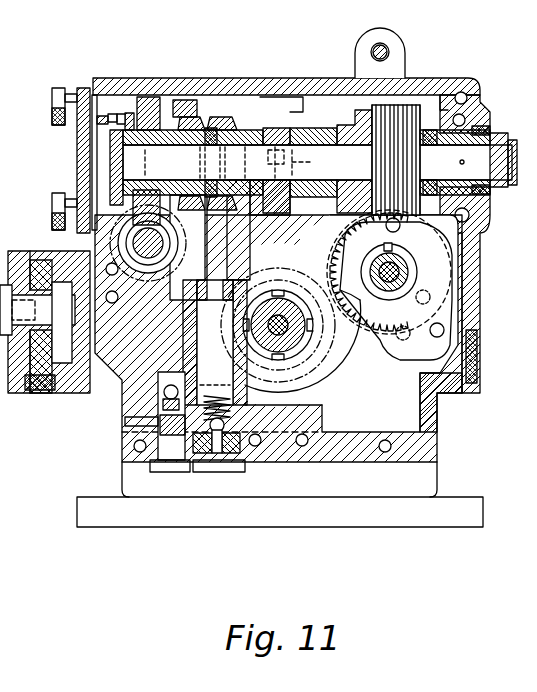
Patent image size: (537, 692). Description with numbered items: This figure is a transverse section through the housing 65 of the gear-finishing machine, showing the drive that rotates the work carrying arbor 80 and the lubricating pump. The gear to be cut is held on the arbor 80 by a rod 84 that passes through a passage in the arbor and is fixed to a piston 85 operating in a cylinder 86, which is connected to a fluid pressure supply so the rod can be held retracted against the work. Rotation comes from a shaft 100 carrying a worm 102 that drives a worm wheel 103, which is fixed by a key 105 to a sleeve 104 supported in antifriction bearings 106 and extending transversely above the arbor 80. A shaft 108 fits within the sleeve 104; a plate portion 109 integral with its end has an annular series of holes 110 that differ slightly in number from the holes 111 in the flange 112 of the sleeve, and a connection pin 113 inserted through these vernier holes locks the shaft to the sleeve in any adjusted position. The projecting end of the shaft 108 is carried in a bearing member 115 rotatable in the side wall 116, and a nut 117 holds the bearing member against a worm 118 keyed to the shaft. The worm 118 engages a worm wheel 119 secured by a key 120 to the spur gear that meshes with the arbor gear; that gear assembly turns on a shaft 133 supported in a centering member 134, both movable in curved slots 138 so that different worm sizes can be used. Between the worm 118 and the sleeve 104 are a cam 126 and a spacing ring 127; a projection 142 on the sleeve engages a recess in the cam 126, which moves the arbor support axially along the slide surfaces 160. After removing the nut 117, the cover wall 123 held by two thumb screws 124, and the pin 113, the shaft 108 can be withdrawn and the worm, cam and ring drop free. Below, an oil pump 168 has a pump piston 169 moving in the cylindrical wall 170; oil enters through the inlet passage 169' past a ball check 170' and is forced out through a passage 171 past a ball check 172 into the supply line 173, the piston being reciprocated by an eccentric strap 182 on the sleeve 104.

The housing 65 is at (247, 80).
The work carrying arbor 80 is at (295, 335).
The rod 84 is at (279, 316).
The piston 85 is at (72, 352).
The cylinder 86 is at (45, 395).
The shaft 100 is at (145, 242).
The worm 102 is at (118, 243).
The worm wheel 103 is at (145, 100).
The sleeve 104 is at (185, 140).
The key 105 is at (143, 150).
The antifriction bearings 106 is at (190, 115).
The shaft 108 is at (276, 152).
The plate portion 109 is at (120, 115).
The holes 110 is at (113, 116).
The holes 111 is at (128, 114).
The flange 112 is at (118, 192).
The connection pin 113 is at (100, 117).
The bearing member 115 is at (495, 133).
The side wall 116 is at (487, 98).
The nut 117 is at (512, 187).
The worm 118 is at (393, 118).
The worm wheel 119 is at (392, 246).
The key 120 is at (400, 262).
The cover wall 123 is at (77, 142).
The thumb screws 124 is at (52, 100).
The cam 126 is at (273, 132).
The spacing ring 127 is at (323, 130).
The shaft 133 is at (397, 280).
The centering member 134 is at (427, 350).
The slots 138 is at (440, 310).
The projection 142 is at (293, 162).
The slide surfaces 160 is at (360, 330).
The oil pump 168 is at (240, 392).
The pump piston 169 is at (246, 342).
The inlet passage 169' is at (245, 464).
The cylindrical wall 170 is at (199, 447).
The ball check 170' is at (229, 458).
The passage 171 is at (162, 428).
The ball check 172 is at (150, 414).
The supply line 173 is at (165, 392).
The eccentric strap 182 is at (213, 130).